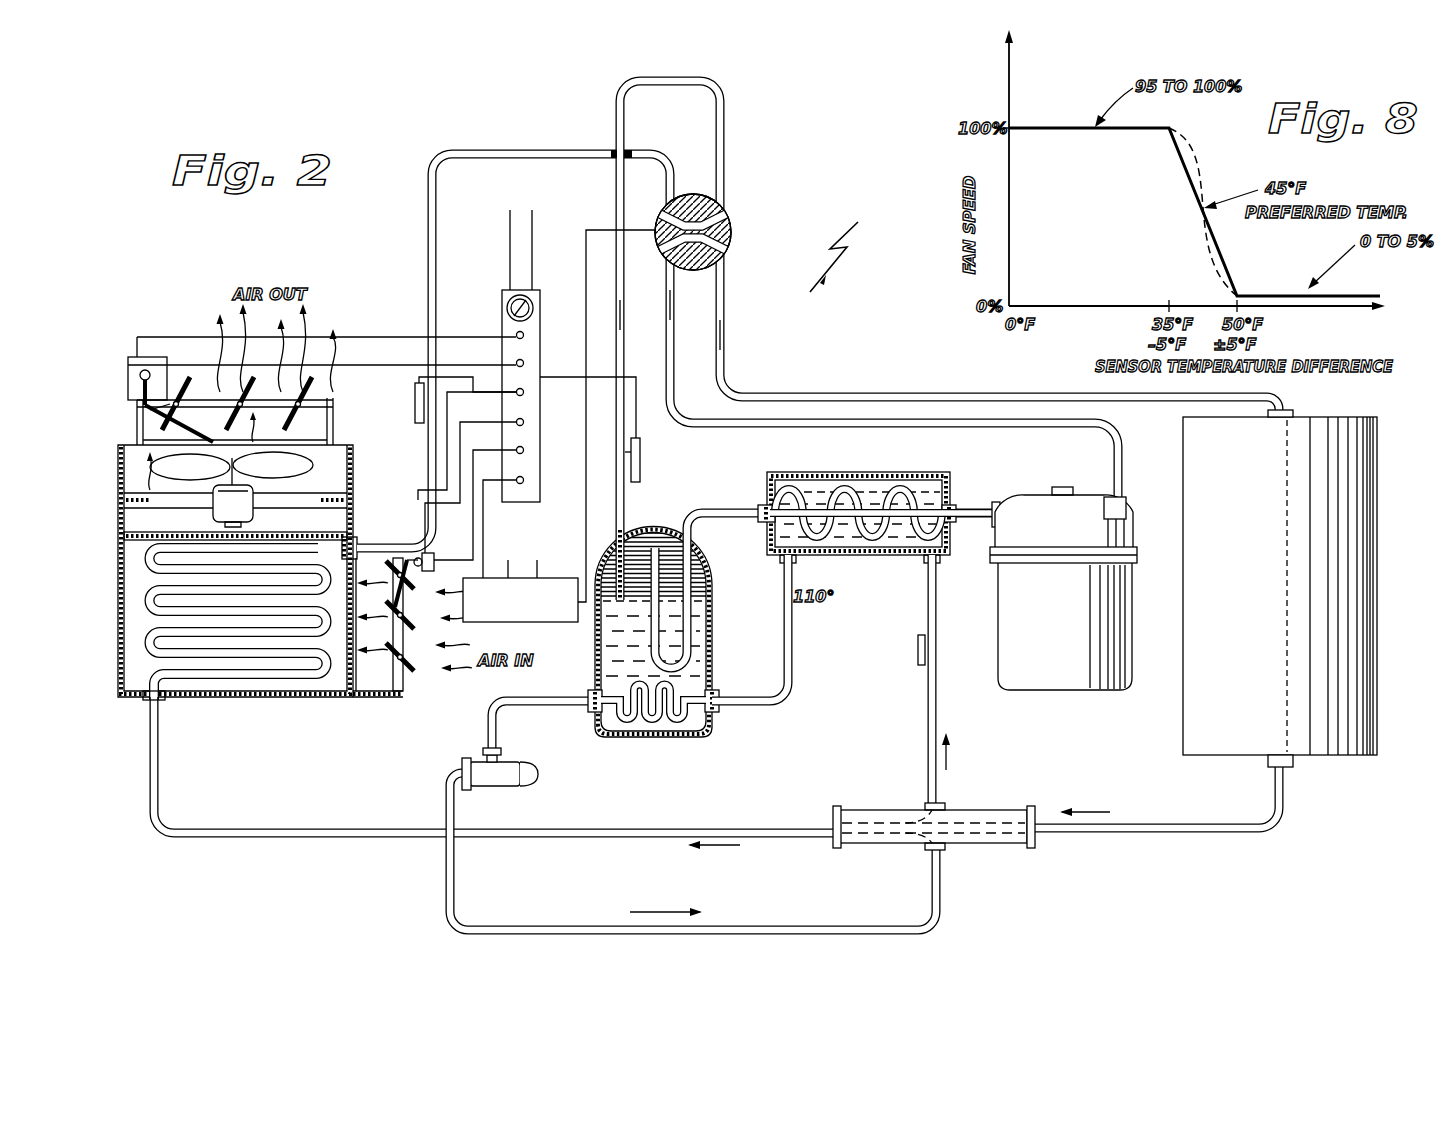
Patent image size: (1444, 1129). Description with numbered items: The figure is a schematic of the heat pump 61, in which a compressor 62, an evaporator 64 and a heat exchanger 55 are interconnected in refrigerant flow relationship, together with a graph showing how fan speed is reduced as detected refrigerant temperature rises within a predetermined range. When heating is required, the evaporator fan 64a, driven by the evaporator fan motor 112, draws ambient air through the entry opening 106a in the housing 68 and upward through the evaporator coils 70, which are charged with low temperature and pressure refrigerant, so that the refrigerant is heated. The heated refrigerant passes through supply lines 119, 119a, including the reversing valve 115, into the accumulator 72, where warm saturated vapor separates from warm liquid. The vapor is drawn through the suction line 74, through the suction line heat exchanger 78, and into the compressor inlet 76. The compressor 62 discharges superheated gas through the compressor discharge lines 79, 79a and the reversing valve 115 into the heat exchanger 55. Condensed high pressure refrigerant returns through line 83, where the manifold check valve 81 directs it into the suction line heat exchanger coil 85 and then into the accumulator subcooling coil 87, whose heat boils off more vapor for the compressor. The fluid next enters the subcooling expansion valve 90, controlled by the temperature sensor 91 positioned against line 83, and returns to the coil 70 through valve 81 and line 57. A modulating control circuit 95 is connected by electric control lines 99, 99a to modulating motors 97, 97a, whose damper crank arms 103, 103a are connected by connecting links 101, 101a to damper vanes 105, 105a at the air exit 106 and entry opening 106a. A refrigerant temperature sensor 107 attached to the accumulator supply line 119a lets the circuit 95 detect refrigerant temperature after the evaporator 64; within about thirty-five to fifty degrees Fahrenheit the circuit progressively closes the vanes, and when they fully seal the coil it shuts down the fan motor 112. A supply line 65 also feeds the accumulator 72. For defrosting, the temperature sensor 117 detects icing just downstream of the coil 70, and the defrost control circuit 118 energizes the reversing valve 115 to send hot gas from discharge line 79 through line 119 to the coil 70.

The heat exchanger 55 is at (1380, 518).
The line 57 is at (318, 838).
The heat pump 61 is at (846, 249).
The compressor 62 is at (1113, 533).
The evaporator 64 is at (363, 541).
The evaporator fan 64a is at (303, 467).
The supply line 65 is at (622, 307).
The housing 68 is at (120, 570).
The evaporator coils 70 is at (217, 607).
The accumulator 72 is at (594, 652).
The suction line 74 is at (722, 511).
The compressor inlet 76 is at (996, 500).
The suction line heat exchanger 78 is at (846, 465).
The compressor discharge line 79 is at (680, 303).
The compressor discharge line 79a is at (726, 337).
The manifold check valve 81 is at (993, 813).
The line 83 is at (935, 632).
The suction line heat exchanger coil 85 is at (898, 488).
The accumulator subcooling coil 87 is at (647, 723).
The subcooling expansion valve 90 is at (505, 782).
The temperature sensor 91 is at (918, 650).
The modulating control circuit 95 is at (500, 310).
The modulating motor 97 is at (153, 372).
The modulating motor 97a is at (428, 558).
The electric control line 99 is at (377, 361).
The electric control line 99a is at (474, 472).
The connecting link 101 is at (142, 433).
The connecting link 101a is at (408, 579).
The damper crank arm 103 is at (140, 388).
The damper crank arm 103a is at (418, 490).
The damper vanes 105 is at (313, 383).
The damper vanes 105a is at (415, 675).
The air exit 106 is at (290, 442).
The entry opening 106a is at (356, 672).
The refrigerant temperature sensor 107 is at (639, 470).
The evaporator fan motor 112 is at (220, 505).
The reversing valve 115 is at (732, 222).
The temperature sensor 117 is at (415, 418).
The defrost control circuit 118 is at (549, 620).
The supply line 119 is at (535, 148).
The accumulator supply line 119a is at (670, 74).